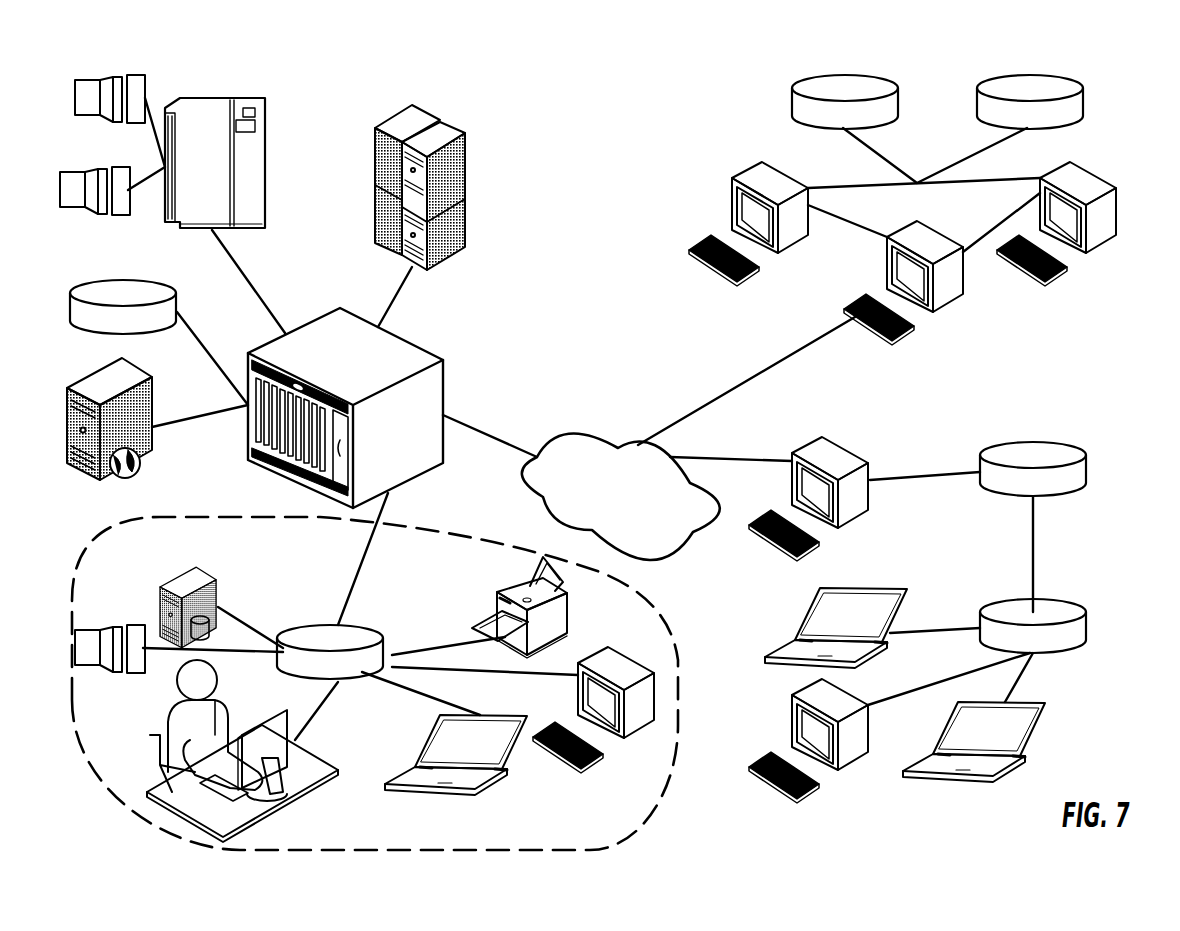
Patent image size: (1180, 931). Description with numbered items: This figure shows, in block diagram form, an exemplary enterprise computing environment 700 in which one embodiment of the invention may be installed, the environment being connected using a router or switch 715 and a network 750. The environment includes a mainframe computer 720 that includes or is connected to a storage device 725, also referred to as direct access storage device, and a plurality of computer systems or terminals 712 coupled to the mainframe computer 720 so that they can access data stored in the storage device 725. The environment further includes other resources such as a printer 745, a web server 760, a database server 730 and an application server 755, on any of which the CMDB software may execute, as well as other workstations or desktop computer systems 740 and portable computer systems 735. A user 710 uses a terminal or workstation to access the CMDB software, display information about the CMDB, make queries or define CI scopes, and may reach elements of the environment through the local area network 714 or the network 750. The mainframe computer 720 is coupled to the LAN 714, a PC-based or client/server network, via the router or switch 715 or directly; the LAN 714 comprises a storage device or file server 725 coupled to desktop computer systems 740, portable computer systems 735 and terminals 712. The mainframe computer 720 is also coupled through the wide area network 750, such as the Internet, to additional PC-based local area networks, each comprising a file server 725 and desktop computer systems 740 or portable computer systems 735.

The enterprise computing environment 700 is at (603, 142).
The user 710 is at (160, 737).
The computer system or terminal 712 is at (95, 115).
The local area network 714 is at (277, 853).
The router or switch 715 is at (443, 360).
The mainframe computer 720 is at (265, 162).
The storage device 725 is at (125, 280).
The database server 730 is at (193, 572).
The portable computer system 735 is at (775, 663).
The desktop computer system 740 is at (740, 278).
The printer 745 is at (567, 612).
The network 750 is at (557, 428).
The application server 755 is at (465, 188).
The web server 760 is at (152, 450).